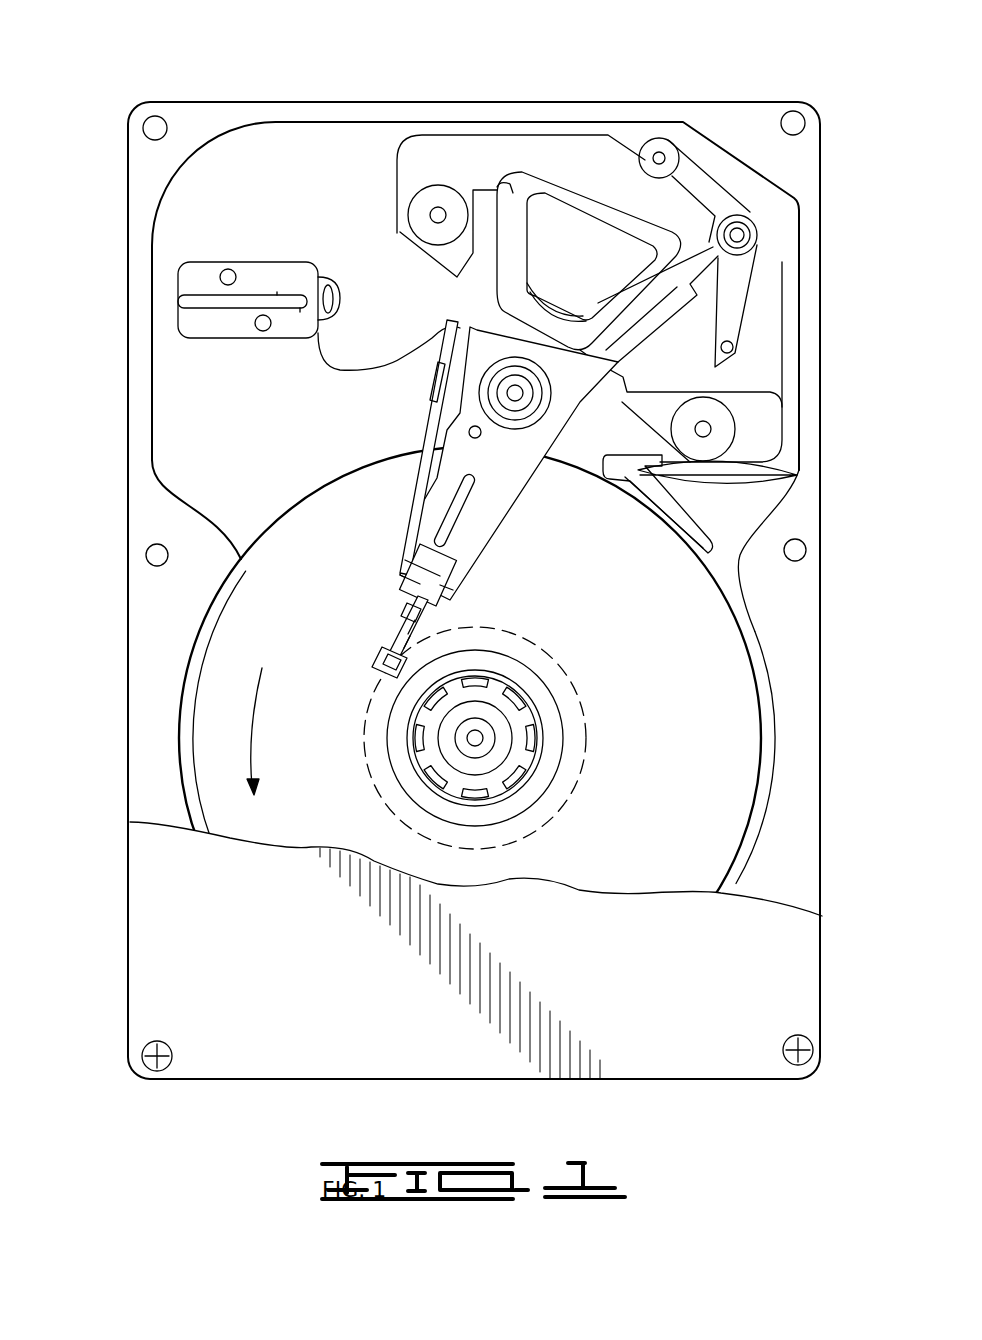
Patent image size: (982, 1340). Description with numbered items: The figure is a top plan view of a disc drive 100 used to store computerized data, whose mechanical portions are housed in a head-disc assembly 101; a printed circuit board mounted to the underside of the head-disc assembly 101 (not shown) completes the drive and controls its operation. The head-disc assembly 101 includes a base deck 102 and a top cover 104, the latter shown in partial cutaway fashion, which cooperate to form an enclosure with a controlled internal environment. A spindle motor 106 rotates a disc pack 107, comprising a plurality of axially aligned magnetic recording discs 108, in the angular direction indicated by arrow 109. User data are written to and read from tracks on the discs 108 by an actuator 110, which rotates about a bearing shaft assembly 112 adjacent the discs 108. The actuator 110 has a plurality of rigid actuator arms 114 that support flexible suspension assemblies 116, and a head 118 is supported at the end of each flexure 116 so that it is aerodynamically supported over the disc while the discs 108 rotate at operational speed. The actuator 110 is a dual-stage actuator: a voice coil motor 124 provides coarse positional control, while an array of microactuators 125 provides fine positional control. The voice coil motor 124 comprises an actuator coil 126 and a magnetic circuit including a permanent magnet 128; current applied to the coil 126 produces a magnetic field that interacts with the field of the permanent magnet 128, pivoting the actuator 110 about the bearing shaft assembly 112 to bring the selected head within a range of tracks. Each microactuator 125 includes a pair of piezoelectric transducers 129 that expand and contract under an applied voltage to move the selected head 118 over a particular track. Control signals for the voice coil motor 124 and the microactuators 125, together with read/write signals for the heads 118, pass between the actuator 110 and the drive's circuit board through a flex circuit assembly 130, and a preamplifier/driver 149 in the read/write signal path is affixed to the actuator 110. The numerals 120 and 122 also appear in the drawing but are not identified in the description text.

The disc drive 100 is at (232, 62).
The head-disc assembly 101 is at (162, 190).
The base deck 102 is at (180, 410).
The top cover 104 is at (182, 893).
The spindle motor 106 is at (509, 731).
The disc pack 107 is at (710, 668).
The magnetic recording discs 108 is at (740, 740).
The arrow 109 is at (252, 714).
The actuator 110 is at (503, 453).
The bearing shaft assembly 112 is at (515, 405).
The rigid actuator arms 114 is at (482, 512).
The flexible suspension assemblies 116 is at (407, 615).
The head 118 is at (385, 662).
The landing zone 120 is at (557, 655).
The latch 122 is at (735, 283).
The voice coil motor 124 is at (598, 158).
The microactuators 125 is at (388, 549).
The actuator coil 126 is at (545, 175).
The permanent magnet 128 is at (692, 372).
The piezoelectric transducers 129 is at (440, 578).
The flex circuit assembly 130 is at (360, 368).
The preamplifier/driver 149 is at (430, 392).